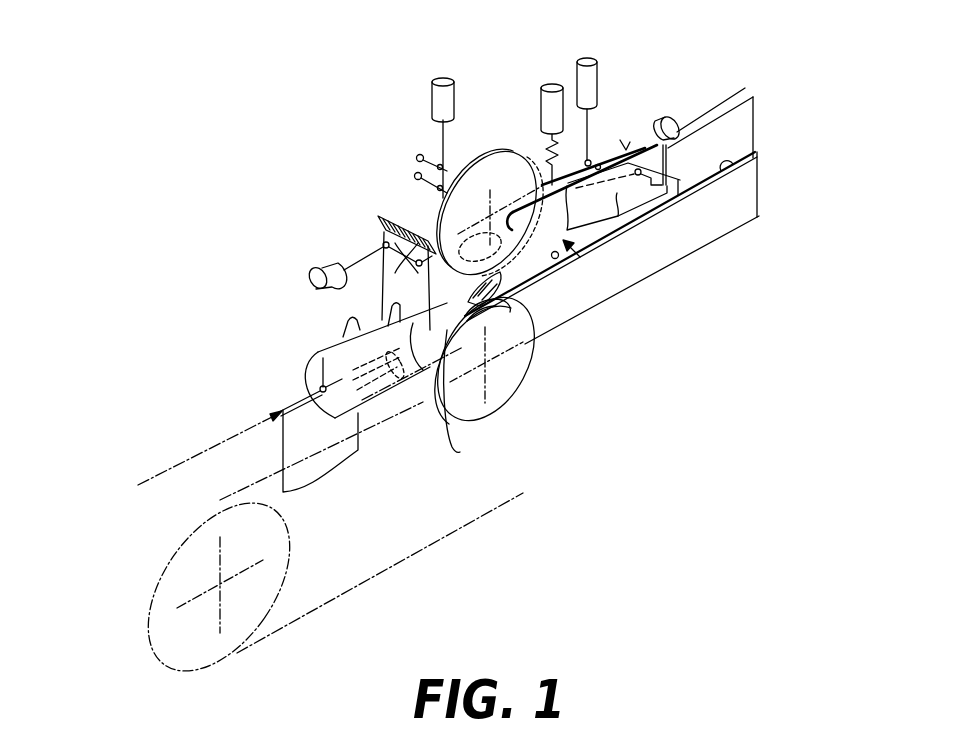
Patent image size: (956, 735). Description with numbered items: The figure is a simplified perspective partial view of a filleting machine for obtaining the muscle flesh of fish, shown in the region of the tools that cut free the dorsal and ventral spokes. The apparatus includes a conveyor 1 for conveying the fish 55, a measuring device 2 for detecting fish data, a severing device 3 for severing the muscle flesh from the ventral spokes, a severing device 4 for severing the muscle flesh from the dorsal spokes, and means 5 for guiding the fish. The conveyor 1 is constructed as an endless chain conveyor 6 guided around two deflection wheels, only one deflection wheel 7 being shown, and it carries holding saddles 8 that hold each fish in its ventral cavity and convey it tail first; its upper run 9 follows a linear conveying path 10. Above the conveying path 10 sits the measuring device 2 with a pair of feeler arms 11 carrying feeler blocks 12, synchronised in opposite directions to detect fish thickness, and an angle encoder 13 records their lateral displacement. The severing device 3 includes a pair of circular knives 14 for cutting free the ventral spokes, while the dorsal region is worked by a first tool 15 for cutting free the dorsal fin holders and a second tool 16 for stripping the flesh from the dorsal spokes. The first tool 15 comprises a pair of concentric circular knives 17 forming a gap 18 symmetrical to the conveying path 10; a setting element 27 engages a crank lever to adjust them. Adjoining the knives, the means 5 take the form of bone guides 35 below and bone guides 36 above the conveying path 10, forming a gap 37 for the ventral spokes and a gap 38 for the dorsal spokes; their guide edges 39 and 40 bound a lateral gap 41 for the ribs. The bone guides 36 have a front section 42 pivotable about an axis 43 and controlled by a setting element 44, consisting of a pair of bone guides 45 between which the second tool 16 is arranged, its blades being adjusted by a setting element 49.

The conveyor 1 is at (136, 581).
The measuring device 2 is at (355, 241).
The severing device 3 is at (556, 373).
The severing device 4 is at (487, 138).
The means for guiding the fish 5 is at (656, 301).
The endless chain conveyor 6 is at (312, 618).
The deflection wheel 7 is at (292, 572).
The holding saddle 8 is at (303, 433).
The upper run 9 is at (387, 443).
The conveying path 10 is at (165, 465).
The feeler arm 11 is at (373, 290).
The feeler block 12 is at (460, 452).
The angle encoder 13 is at (315, 272).
The circular knife 14 is at (500, 386).
The first tool 15 is at (422, 209).
The second tool 16 is at (588, 250).
The circular knife 17 is at (510, 170).
The gap 18 is at (472, 170).
The setting element 27 is at (432, 100).
The bone guide 35 is at (549, 331).
The bone guide 36 is at (740, 137).
The gap 37 is at (605, 245).
The gap 38 is at (718, 108).
The guide edge 39 is at (735, 166).
The guide edge 40 is at (556, 259).
The lateral gap 41 is at (712, 215).
The front section 42 is at (650, 212).
The axis 43 is at (640, 112).
The setting element 44 is at (597, 83).
The bone guide 45 is at (625, 149).
The setting element 49 is at (560, 86).
The fish 55 is at (313, 380).